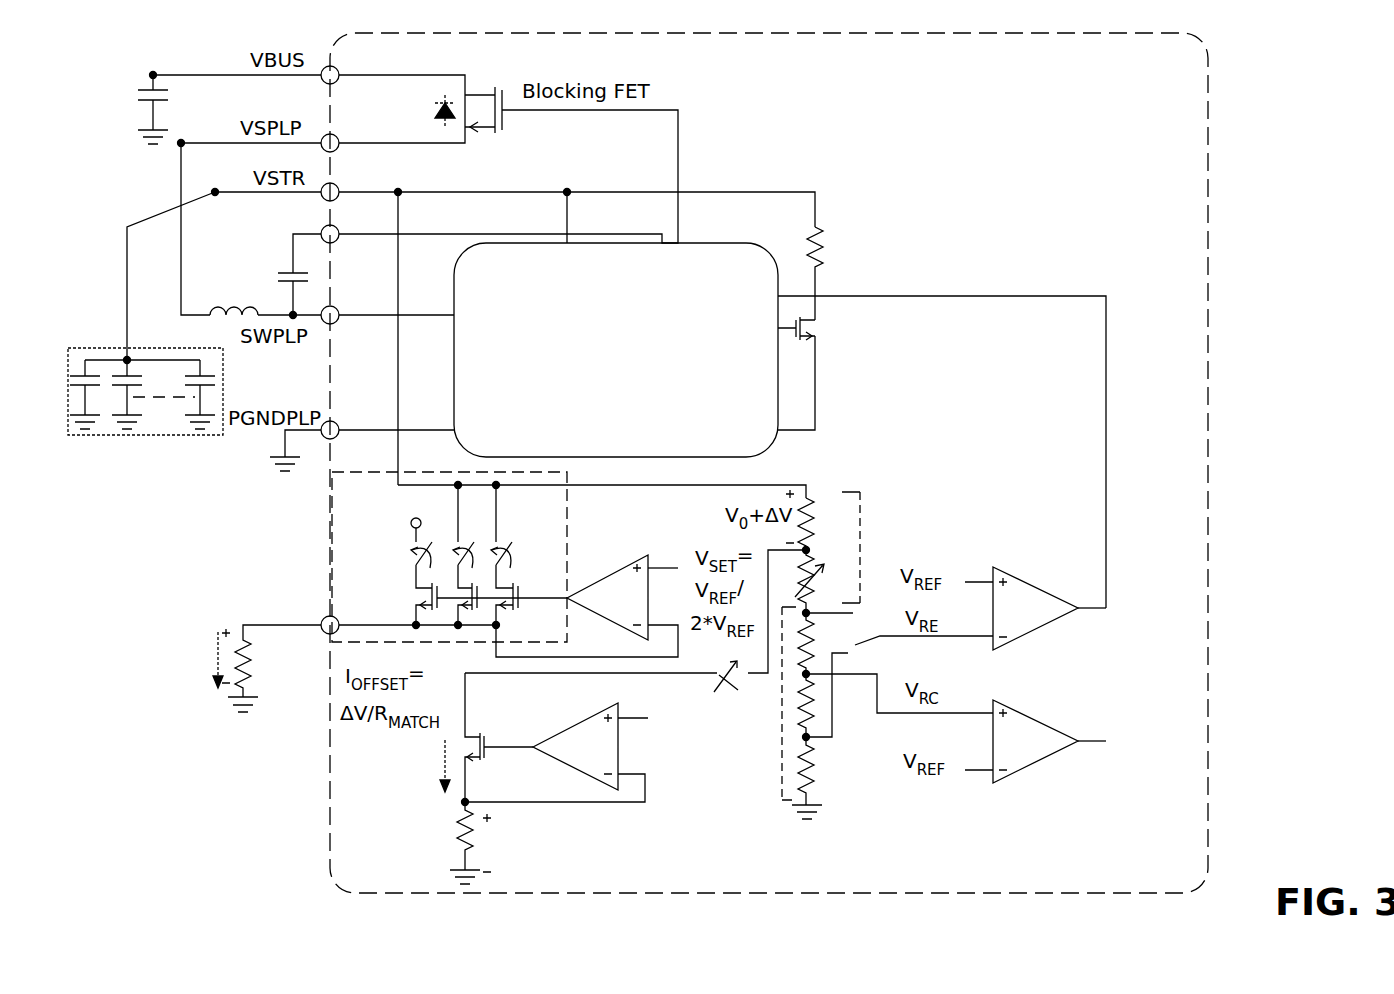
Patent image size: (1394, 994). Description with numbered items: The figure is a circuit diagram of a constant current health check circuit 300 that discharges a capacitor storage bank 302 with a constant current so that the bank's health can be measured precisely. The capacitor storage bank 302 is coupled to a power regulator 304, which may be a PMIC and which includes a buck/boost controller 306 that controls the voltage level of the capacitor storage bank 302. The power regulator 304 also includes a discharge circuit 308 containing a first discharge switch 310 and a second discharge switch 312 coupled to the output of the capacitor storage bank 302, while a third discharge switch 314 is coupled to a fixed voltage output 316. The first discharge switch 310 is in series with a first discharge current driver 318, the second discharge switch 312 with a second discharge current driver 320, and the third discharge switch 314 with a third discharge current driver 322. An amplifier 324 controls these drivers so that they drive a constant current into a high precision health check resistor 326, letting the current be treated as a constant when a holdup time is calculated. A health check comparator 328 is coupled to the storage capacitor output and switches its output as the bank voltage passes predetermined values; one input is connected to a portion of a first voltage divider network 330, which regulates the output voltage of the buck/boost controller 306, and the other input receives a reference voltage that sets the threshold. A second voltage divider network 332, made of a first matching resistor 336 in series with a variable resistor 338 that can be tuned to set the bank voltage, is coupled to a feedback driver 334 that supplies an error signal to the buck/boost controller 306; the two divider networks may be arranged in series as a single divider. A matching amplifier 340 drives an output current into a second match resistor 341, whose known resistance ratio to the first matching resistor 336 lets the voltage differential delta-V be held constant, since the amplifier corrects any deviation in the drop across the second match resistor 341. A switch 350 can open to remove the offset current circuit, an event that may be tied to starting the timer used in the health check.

The constant current health check circuit 300 is at (116, 68).
The capacitor storage bank 302 is at (82, 348).
The power regulator 304 is at (1208, 147).
The buck/boost controller 306 is at (720, 243).
The discharge circuit 308 is at (332, 531).
The first discharge switch 310 is at (506, 548).
The second discharge switch 312 is at (458, 538).
The third discharge switch 314 is at (415, 558).
The fixed voltage output 316 is at (383, 522).
The first discharge current driver 318 is at (516, 610).
The second discharge current driver 320 is at (474, 612).
The third discharge current driver 322 is at (450, 617).
The amplifier 324 is at (607, 577).
The health check resistor 326 is at (250, 660).
The health check comparator 328 is at (1037, 720).
The first voltage divider network 330 is at (782, 778).
The second voltage divider network 332 is at (862, 492).
The feedback driver 334 is at (1040, 630).
The first matching resistor 336 is at (820, 525).
The variable resistor 338 is at (826, 565).
The matching amplifier 340 is at (575, 768).
The second match resistor 341 is at (455, 845).
The switch 350 is at (710, 678).